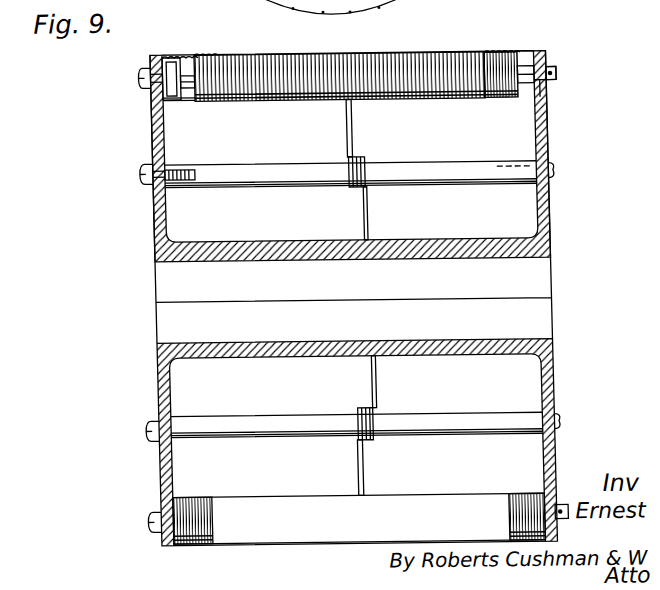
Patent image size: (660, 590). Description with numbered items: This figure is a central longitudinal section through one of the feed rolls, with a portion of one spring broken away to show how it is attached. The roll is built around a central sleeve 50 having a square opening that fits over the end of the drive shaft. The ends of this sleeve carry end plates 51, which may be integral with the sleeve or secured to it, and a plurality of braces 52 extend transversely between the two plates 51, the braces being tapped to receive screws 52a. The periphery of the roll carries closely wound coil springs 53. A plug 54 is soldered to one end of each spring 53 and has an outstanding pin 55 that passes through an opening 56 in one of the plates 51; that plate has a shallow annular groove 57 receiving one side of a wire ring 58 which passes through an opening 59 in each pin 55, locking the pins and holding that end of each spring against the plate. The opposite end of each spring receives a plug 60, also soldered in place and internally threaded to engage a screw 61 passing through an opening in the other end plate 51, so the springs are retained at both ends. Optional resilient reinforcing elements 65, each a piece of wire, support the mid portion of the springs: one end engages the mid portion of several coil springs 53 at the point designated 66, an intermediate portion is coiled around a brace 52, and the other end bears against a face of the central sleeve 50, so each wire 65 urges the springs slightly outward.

The central sleeve 50 is at (272, 239).
The end plates 51 is at (154, 131).
The braces 52 is at (448, 166).
The screws 52a is at (148, 170).
The coil springs 53 is at (476, 52).
The plug 54 is at (528, 64).
The pin 55 is at (560, 515).
The opening 56 is at (553, 87).
The annular groove 57 is at (555, 502).
The wire ring 58 is at (554, 72).
The opening 59 is at (562, 74).
The plug 60 is at (181, 61).
The screw 61 is at (150, 72).
The resilient reinforcing elements 65 is at (356, 150).
The end of reinforcing wire engaging springs 66 is at (352, 105).